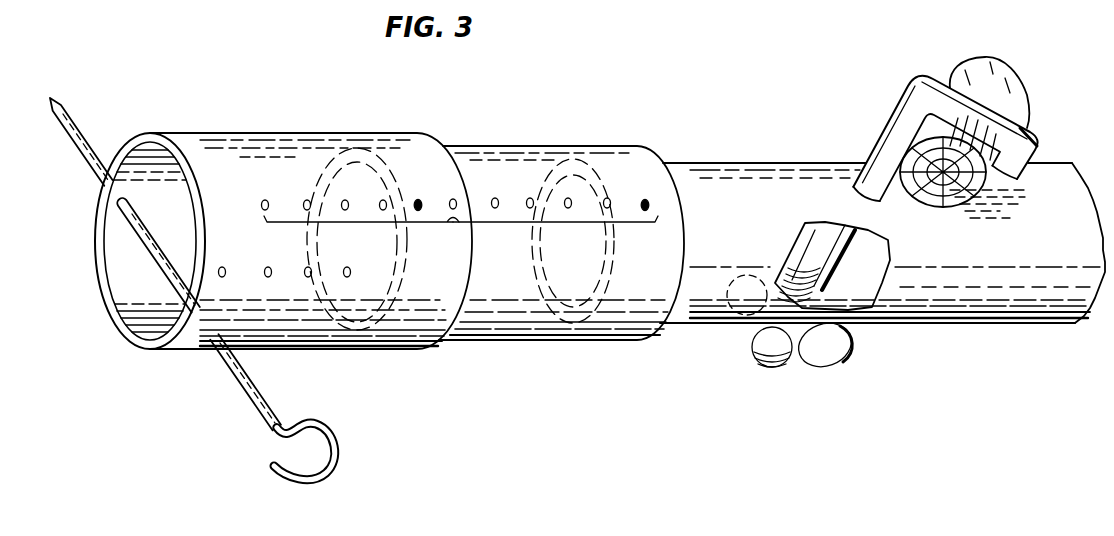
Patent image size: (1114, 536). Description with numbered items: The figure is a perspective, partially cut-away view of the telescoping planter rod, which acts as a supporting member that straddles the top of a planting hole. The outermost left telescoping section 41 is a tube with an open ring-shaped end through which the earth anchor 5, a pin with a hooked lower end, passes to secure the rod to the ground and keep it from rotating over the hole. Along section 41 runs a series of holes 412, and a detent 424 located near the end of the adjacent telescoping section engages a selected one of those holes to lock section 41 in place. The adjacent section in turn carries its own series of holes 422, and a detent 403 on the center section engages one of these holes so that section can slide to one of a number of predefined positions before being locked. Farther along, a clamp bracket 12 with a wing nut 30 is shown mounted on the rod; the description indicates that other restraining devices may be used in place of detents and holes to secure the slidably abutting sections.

The telescoping section 41 is at (230, 142).
The series of holes 412 is at (366, 224).
The detent 424 is at (418, 200).
The series of holes 422 is at (517, 224).
The detent 403 is at (645, 201).
The earth anchor 5 is at (338, 431).
The clamp bracket 12 is at (918, 86).
The wing nut 30 is at (997, 78).